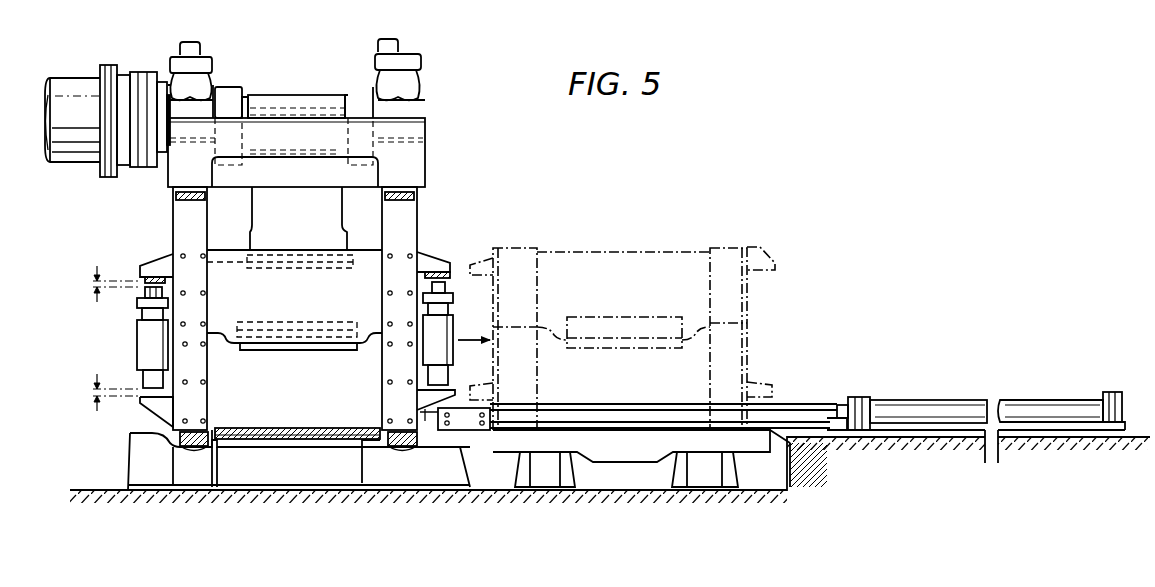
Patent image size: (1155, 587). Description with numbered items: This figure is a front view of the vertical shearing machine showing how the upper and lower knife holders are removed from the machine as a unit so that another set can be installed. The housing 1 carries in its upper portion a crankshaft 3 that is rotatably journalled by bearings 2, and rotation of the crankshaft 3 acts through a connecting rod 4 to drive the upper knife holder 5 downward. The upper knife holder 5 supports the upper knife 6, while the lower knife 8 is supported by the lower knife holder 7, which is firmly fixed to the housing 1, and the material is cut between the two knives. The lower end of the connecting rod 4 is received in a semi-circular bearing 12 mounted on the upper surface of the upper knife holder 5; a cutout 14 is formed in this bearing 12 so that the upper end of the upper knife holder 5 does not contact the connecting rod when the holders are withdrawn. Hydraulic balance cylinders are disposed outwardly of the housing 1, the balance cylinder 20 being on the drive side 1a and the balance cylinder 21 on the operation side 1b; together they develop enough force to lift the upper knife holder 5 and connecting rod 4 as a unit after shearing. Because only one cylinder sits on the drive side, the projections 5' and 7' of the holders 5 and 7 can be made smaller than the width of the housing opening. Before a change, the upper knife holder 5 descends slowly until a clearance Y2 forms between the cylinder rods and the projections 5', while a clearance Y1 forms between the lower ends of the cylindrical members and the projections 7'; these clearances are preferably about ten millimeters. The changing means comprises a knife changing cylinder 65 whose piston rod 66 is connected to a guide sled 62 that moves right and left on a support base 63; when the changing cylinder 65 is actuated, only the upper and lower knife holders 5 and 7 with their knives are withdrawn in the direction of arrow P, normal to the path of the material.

The housing 1 is at (425, 152).
The drive side of the housing 1a is at (174, 208).
The operation side of the housing 1b is at (420, 204).
The bearings 2 is at (167, 72).
The crankshaft 3 is at (228, 87).
The connecting rod 4 is at (293, 93).
The upper knife holder 5 is at (294, 219).
The projections of the upper knife holder 5' is at (288, 251).
The upper knife 6 is at (264, 322).
The lower knife holder 7 is at (297, 473).
The projections of the lower knife holder 7' is at (281, 406).
The lower knife 8 is at (298, 346).
The semi-circular bearing 12 is at (302, 270).
The cutout 14 is at (250, 262).
The balance cylinder 20 is at (138, 340).
The balance cylinder 21 is at (456, 318).
The guide sled 62 is at (473, 428).
The support base 63 is at (633, 457).
The knife changing cylinder 65 is at (892, 407).
The piston rod 66 is at (813, 408).
The arrow P is at (474, 351).
The clearance Y1 is at (100, 277).
The clearance Y2 is at (101, 386).